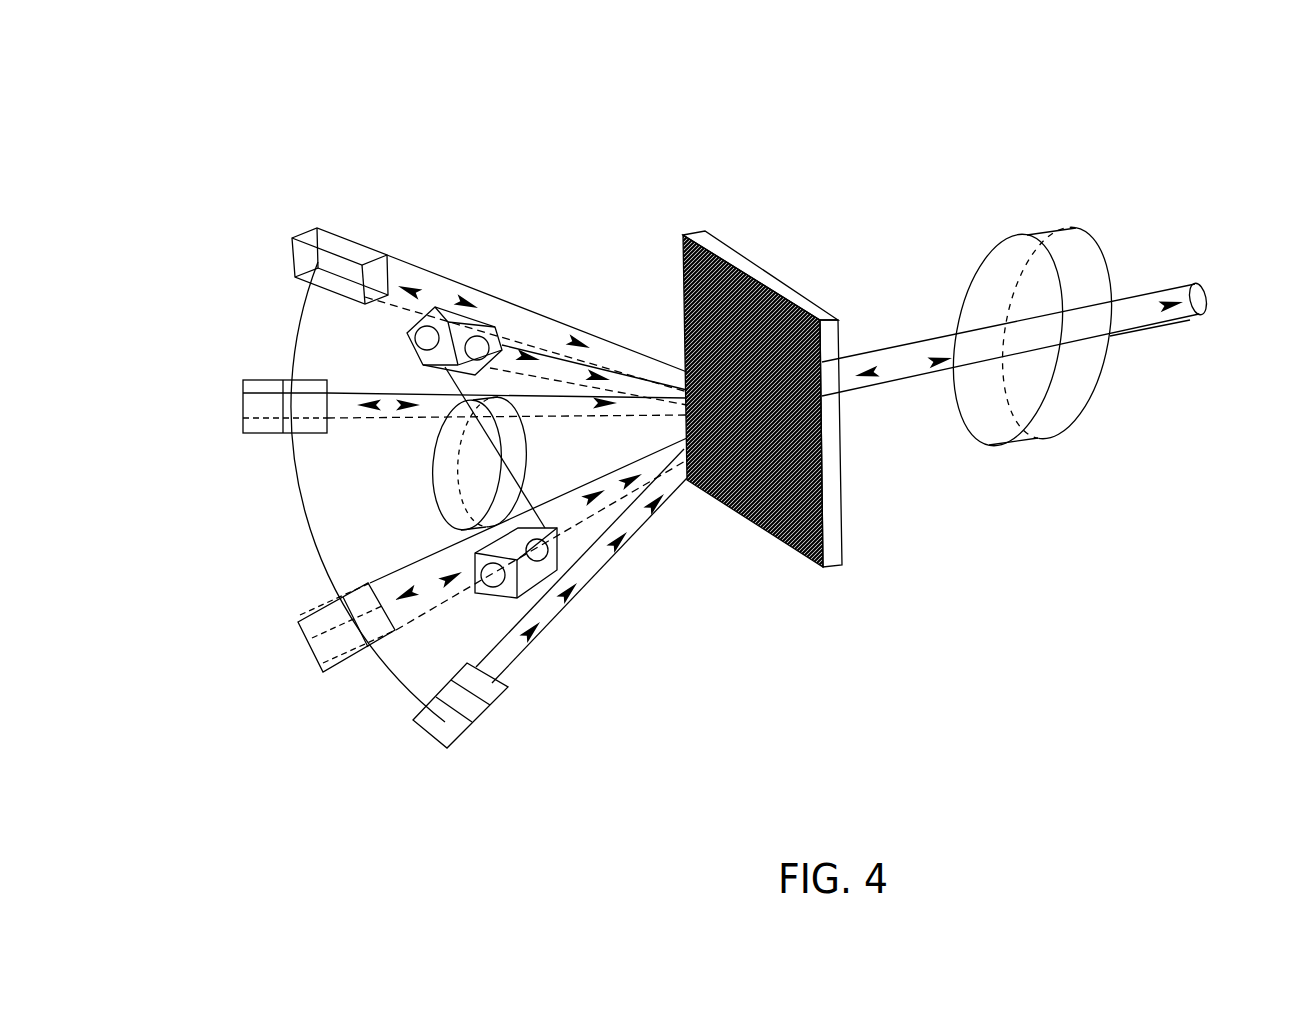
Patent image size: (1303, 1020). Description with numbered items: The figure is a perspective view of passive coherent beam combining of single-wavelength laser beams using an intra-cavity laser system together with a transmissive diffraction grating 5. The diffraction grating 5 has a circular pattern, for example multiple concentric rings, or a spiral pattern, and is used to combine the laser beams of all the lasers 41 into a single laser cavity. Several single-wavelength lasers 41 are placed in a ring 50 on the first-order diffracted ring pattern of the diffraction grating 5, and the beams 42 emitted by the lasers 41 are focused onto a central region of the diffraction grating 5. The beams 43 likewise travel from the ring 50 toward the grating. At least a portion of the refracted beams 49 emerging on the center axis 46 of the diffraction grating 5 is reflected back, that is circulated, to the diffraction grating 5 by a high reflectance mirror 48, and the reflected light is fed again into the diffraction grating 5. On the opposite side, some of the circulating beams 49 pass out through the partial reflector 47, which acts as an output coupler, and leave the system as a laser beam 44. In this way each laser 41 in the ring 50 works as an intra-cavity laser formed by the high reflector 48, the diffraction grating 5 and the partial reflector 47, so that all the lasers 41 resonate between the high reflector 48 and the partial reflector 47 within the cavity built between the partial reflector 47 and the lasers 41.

The transmissive diffraction grating 5 is at (752, 272).
The single-wavelength laser 41 is at (333, 260).
The beam 42 is at (520, 310).
The laser beam 43 is at (580, 338).
The laser beam 44 is at (1137, 330).
The center axis 46 is at (1162, 290).
The partial reflector 47 is at (1066, 272).
The high reflectance mirror 48 is at (525, 492).
The refracted beam 49 is at (897, 347).
The ring 50 is at (400, 693).